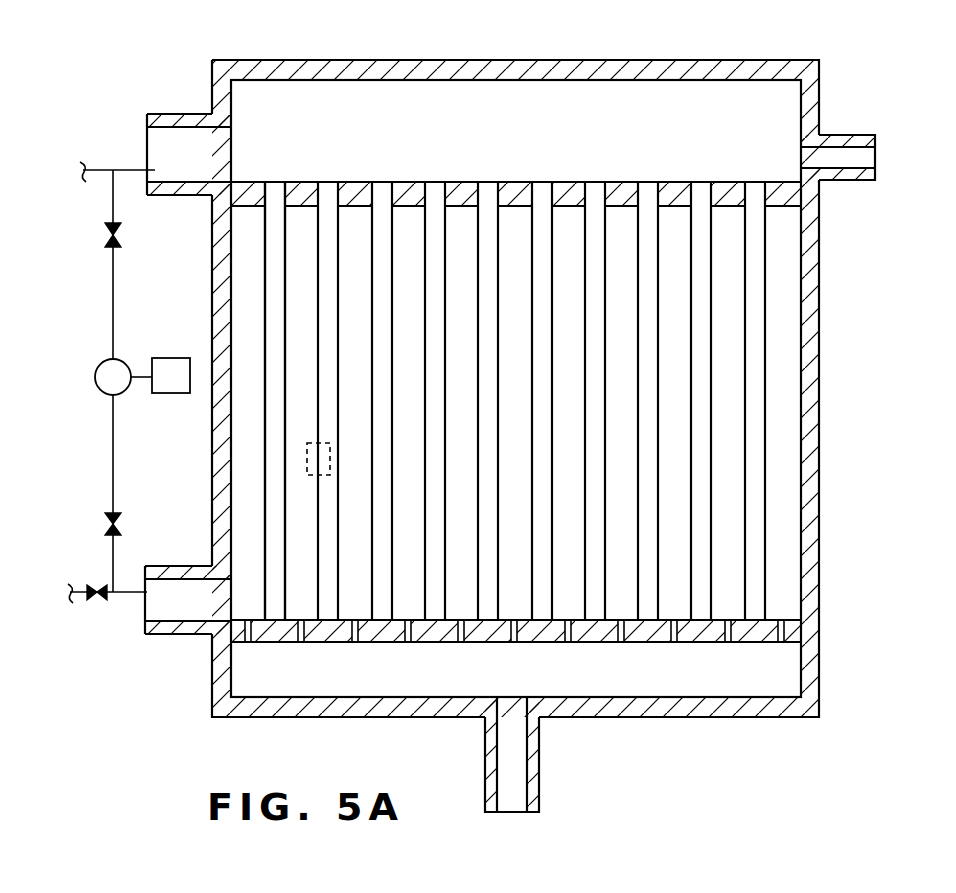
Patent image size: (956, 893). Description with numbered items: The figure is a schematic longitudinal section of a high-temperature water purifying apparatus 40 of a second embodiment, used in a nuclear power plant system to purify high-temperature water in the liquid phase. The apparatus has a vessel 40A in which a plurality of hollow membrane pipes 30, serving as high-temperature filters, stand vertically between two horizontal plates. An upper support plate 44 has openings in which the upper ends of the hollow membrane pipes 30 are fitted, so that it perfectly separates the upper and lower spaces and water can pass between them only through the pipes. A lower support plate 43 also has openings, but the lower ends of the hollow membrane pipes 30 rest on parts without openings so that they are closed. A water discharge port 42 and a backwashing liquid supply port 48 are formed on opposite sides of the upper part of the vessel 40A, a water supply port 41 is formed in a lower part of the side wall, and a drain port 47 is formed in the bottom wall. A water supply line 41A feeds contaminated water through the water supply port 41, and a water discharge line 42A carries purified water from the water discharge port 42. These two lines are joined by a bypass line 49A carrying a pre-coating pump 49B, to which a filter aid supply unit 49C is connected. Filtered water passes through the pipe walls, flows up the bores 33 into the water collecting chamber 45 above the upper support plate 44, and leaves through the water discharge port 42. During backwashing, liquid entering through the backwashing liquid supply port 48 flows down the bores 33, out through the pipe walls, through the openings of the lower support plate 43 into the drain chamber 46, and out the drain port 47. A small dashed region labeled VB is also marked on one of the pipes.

The hollow membrane pipe 30 is at (311, 603).
The bore 33 is at (327, 540).
The high-temperature water purifying apparatus 40 is at (281, 57).
The vessel 40A is at (684, 62).
The water supply port 41 is at (185, 577).
The water supply line 41A is at (89, 603).
The water discharge port 42 is at (195, 128).
The water discharge line 42A is at (100, 168).
The lower support plate 43 is at (375, 632).
The upper support plate 44 is at (353, 183).
The water collecting chamber 45 is at (498, 161).
The drain chamber 46 is at (525, 680).
The drain port 47 is at (513, 764).
The backwashing liquid supply port 48 is at (836, 158).
The bypass line 49A is at (114, 303).
The pre-coating pump 49B is at (125, 389).
The filter aid supply unit 49C is at (171, 358).
The cell volume element VB is at (306, 459).